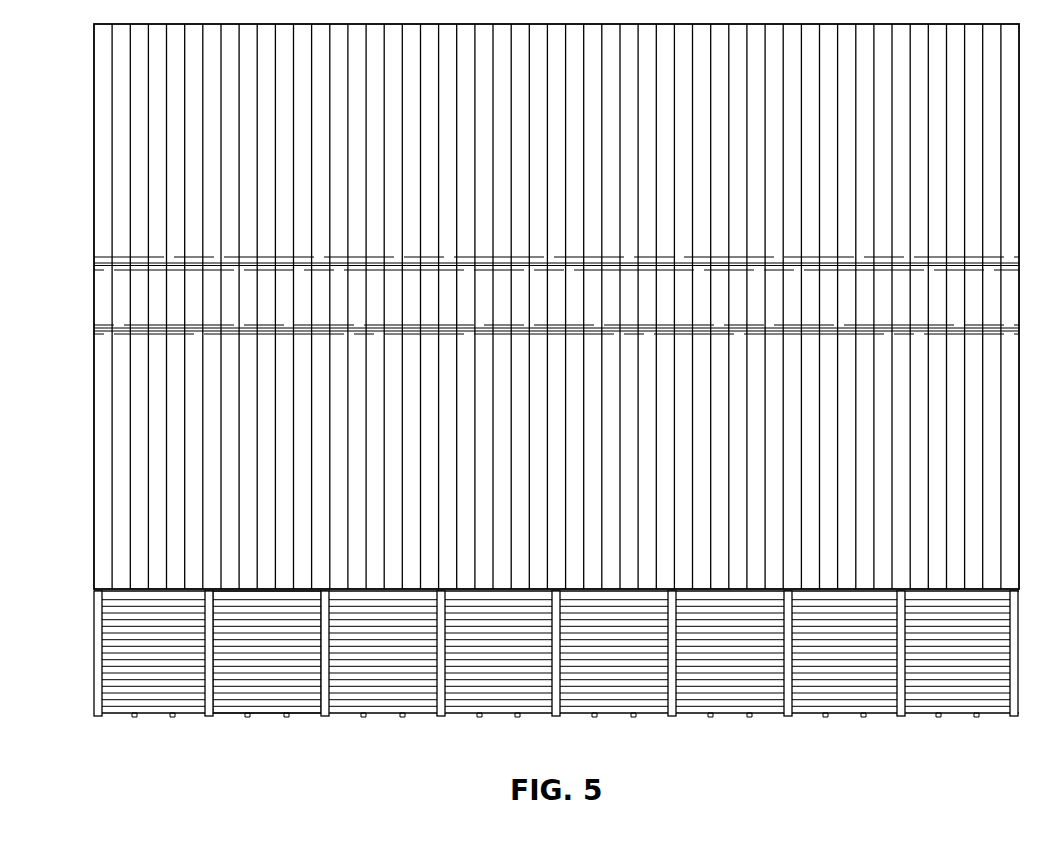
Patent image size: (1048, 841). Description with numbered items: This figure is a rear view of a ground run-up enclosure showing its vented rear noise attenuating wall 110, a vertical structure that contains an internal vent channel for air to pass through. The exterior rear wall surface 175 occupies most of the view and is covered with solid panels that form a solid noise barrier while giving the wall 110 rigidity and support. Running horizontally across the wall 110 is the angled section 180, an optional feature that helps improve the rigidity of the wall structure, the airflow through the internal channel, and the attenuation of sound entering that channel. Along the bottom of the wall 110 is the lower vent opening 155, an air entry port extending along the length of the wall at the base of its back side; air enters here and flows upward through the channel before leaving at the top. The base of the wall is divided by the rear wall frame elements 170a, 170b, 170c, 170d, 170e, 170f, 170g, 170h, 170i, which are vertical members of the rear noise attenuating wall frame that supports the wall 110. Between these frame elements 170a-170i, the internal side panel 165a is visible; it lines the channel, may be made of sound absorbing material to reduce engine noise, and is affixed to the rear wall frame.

The vented rear noise attenuating wall 110 is at (192, 231).
The angled section 180 is at (119, 299).
The exterior rear wall surface 175 is at (160, 509).
The lower vent opening 155 is at (378, 623).
The internal side panel 165a is at (275, 669).
The rear wall frame element 170a is at (98, 716).
The rear wall frame element 170b is at (209, 716).
The rear wall frame element 170c is at (325, 716).
The rear wall frame element 170d is at (441, 716).
The rear wall frame element 170e is at (556, 716).
The rear wall frame element 170f is at (672, 716).
The rear wall frame element 170g is at (788, 716).
The rear wall frame element 170h is at (901, 716).
The rear wall frame element 170i is at (1014, 716).